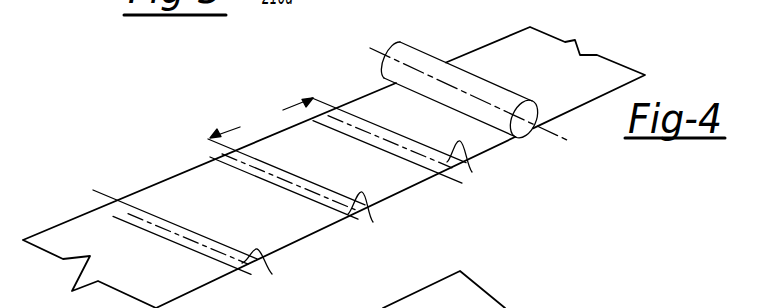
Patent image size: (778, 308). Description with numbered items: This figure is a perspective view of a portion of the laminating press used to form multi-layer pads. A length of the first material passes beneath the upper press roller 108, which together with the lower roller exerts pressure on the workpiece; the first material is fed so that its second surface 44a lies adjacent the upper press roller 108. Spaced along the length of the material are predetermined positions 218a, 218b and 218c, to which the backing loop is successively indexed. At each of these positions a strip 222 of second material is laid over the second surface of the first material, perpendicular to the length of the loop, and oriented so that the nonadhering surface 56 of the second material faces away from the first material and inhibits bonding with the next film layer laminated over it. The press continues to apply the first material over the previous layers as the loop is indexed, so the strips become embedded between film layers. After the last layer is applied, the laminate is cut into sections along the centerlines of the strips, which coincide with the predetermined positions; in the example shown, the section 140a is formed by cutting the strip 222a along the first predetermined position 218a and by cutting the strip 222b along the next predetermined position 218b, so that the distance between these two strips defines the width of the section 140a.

The second surface of first material 44a is at (235, 210).
The first predetermined position 218a is at (311, 96).
The next predetermined position 218b is at (206, 141).
The predetermined position 218c is at (95, 190).
The section 140a is at (261, 118).
The nonadhering surface 56 is at (381, 125).
The upper press roller 108 is at (457, 72).
The strip 222 is at (272, 274).
The strip 222a is at (472, 172).
The strip 222b is at (373, 222).